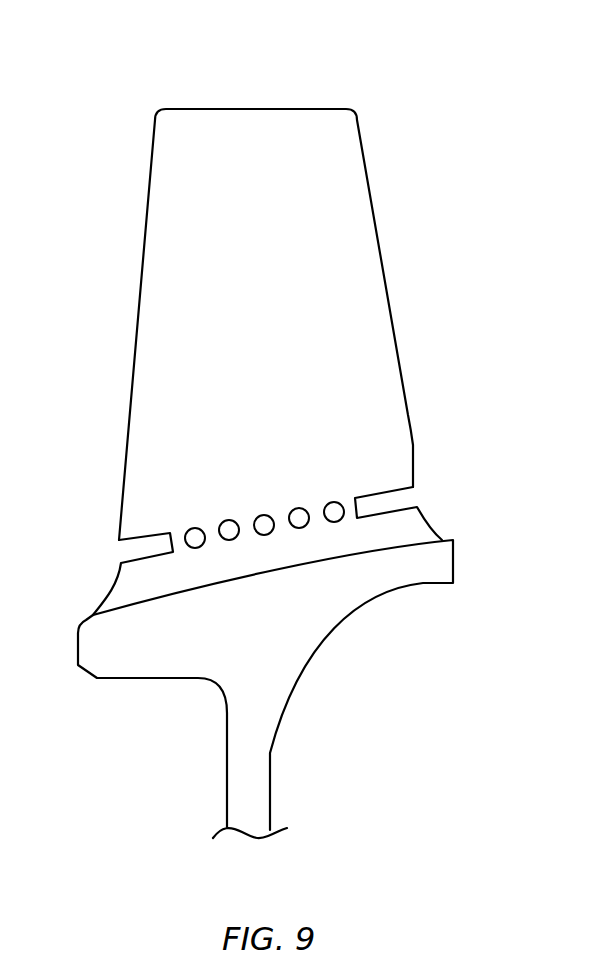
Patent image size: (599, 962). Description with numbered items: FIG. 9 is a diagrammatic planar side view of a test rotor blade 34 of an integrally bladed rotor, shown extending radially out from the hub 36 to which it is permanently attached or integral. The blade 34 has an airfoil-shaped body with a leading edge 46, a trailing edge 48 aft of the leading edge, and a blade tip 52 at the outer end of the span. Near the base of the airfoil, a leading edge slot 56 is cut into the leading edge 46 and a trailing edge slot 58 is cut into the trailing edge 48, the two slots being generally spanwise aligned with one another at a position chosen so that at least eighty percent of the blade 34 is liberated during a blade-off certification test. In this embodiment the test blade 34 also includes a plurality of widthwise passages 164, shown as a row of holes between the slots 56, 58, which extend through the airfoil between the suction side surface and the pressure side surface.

The rotor blade 34 is at (449, 82).
The hub 36 is at (127, 662).
The leading edge 46 is at (135, 332).
The trailing edge 48 is at (393, 312).
The blade tip 52 is at (283, 109).
The leading edge slot 56 is at (104, 556).
The trailing edge slot 58 is at (432, 492).
The widthwise passages 164 is at (330, 504).